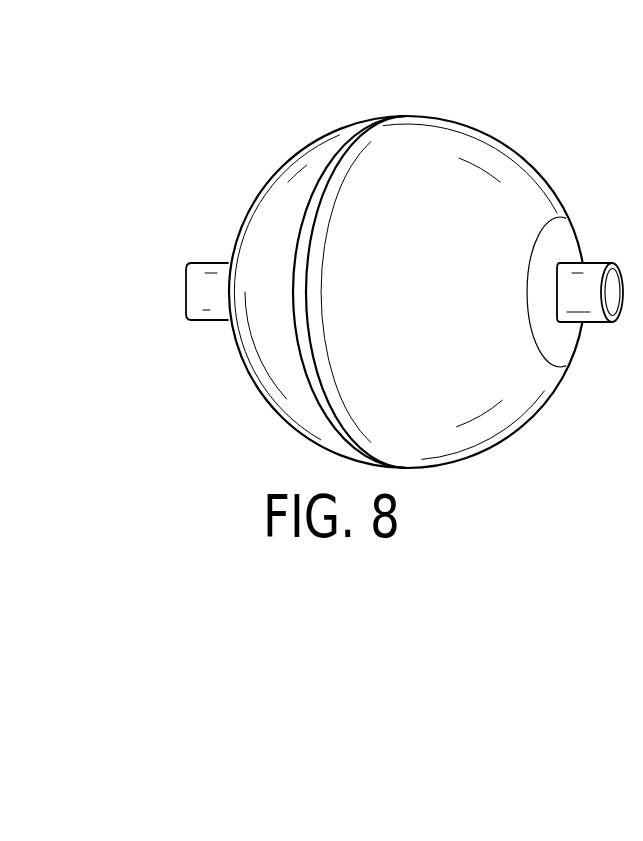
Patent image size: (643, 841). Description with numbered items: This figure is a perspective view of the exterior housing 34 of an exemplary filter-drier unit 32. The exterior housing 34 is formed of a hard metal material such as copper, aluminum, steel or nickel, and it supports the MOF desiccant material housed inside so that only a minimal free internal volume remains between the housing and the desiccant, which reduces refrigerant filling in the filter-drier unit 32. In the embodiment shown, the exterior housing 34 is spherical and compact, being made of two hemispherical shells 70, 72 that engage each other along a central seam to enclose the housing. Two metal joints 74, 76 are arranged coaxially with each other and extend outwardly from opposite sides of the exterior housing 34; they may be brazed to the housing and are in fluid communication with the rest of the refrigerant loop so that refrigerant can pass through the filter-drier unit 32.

The filter-drier unit 32 is at (242, 123).
The exterior housing 34 is at (288, 386).
The hemispherical shell 70 is at (265, 336).
The hemispherical shell 72 is at (494, 417).
The metal joint 74 is at (198, 281).
The metal joint 76 is at (595, 320).